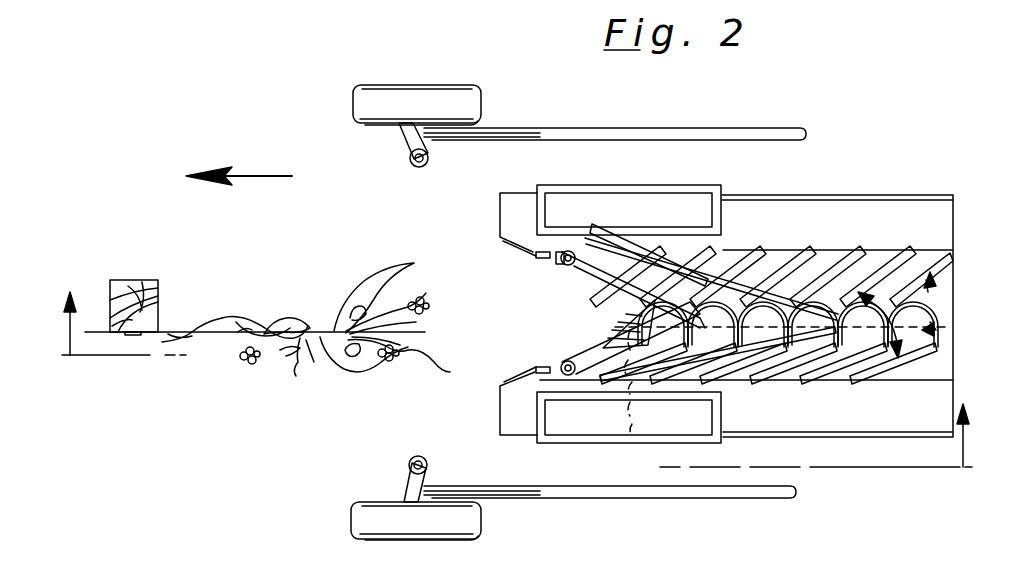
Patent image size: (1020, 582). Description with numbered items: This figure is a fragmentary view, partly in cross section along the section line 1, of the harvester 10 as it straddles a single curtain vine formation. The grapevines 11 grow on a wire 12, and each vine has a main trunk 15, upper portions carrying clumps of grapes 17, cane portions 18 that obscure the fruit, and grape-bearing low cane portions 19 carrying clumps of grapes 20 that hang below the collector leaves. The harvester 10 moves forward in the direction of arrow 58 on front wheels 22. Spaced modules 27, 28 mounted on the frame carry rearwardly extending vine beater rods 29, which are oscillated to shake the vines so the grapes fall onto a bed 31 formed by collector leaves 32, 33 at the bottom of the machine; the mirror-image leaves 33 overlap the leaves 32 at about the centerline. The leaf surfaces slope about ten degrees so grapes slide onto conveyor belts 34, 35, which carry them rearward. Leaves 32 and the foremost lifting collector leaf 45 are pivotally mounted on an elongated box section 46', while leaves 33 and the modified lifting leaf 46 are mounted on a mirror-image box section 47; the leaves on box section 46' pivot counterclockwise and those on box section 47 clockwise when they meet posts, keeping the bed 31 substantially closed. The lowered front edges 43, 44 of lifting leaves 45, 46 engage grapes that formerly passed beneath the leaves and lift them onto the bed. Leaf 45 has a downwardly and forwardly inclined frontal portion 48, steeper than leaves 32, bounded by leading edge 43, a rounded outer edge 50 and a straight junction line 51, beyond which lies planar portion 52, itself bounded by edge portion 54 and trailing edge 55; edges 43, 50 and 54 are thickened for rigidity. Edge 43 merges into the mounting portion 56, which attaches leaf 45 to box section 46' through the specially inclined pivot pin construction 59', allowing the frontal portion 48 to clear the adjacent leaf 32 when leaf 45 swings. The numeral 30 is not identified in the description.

The section line 1 is at (80, 398).
The harvester 10 is at (867, 146).
The grapevines 11 is at (294, 354).
The wire 12 is at (186, 330).
The main trunk 15 is at (276, 334).
The clumps of grapes 17 is at (130, 280).
The cane portions 18 is at (370, 310).
The grape-bearing low cane portions 19 is at (388, 322).
The clumps of grapes 20 is at (430, 308).
The front wheels 22 is at (354, 100).
The module 27 is at (580, 440).
The module 28 is at (618, 194).
The vine beater rods 29 is at (762, 264).
The frame 30 is at (930, 200).
The bed 31 is at (864, 196).
The collector leaves 32 is at (887, 268).
The collector leaves 33 is at (908, 374).
The conveyor belt 34 is at (792, 200).
The conveyor belt 35 is at (804, 440).
The front edge 43 is at (606, 302).
The front edge 44 is at (586, 338).
The lifting collector leaf 45 is at (652, 248).
The lifting collector leaf 46 is at (599, 389).
The box section 46' is at (509, 261).
The box section 47 is at (522, 370).
The frontal portion 48 is at (618, 322).
The rounded outer edge 50 is at (626, 445).
The junction line 51 is at (696, 240).
The planar portion 52 is at (621, 258).
The edge portion 54 is at (728, 252).
The trailing edge 55 is at (670, 266).
The mounting portion 56 is at (570, 268).
The arrow 58 is at (253, 176).
The pivot pin construction 59' is at (537, 271).